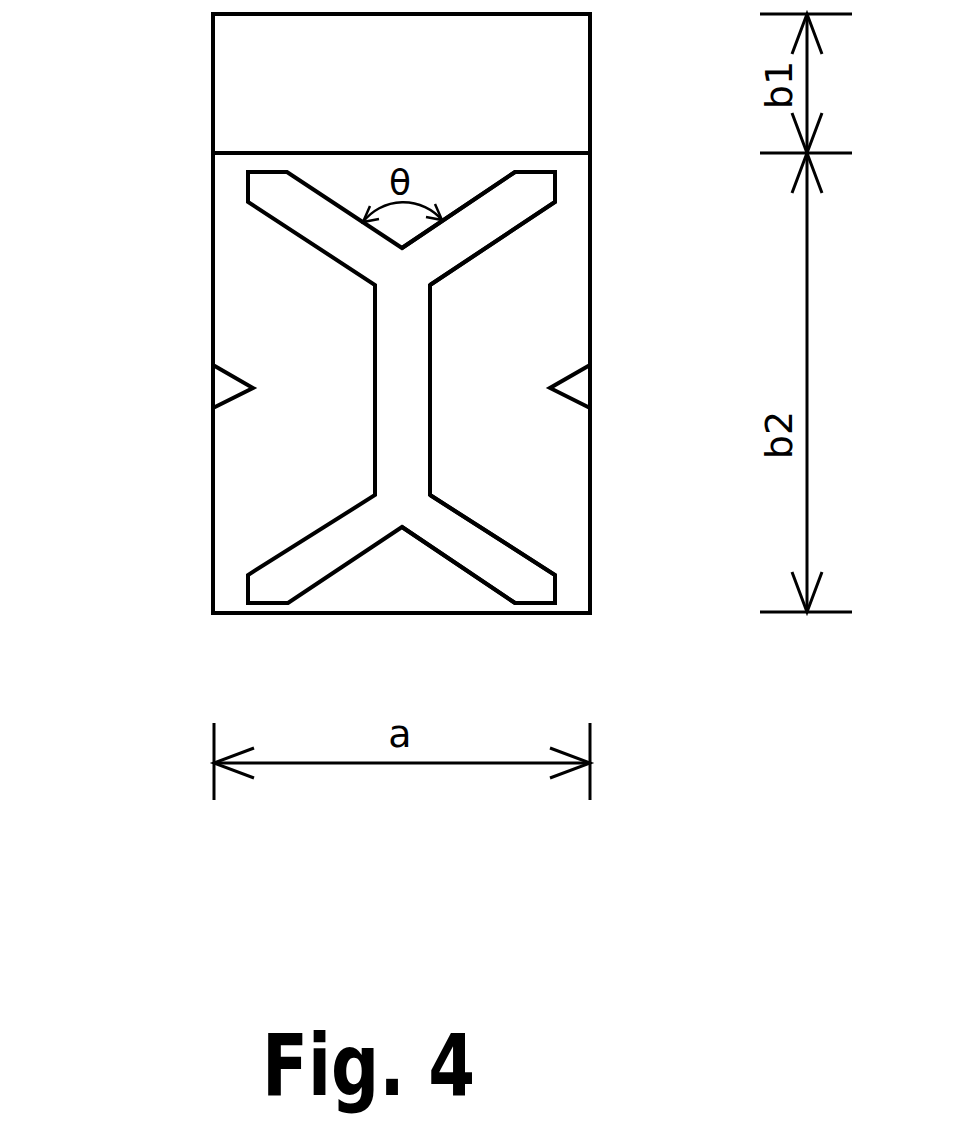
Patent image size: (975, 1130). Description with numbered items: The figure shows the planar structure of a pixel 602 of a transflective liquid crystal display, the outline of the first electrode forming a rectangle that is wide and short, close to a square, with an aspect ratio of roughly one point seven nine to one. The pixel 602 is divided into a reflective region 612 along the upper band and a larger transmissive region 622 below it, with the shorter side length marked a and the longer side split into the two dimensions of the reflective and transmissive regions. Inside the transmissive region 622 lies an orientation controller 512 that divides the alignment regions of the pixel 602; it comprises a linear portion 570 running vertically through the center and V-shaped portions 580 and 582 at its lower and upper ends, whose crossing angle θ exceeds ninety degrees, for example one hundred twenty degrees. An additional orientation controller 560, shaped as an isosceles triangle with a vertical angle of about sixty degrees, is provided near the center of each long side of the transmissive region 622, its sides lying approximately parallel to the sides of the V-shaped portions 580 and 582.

The orientation controller 512 is at (373, 437).
The additional orientation controller 560 is at (213, 385).
The linear portion 570 is at (412, 348).
The V-shaped portion 580 is at (502, 560).
The V-shaped portion 582 is at (507, 218).
The pixel 602 is at (206, 189).
The reflective region 612 is at (213, 110).
The transmissive region 622 is at (213, 300).